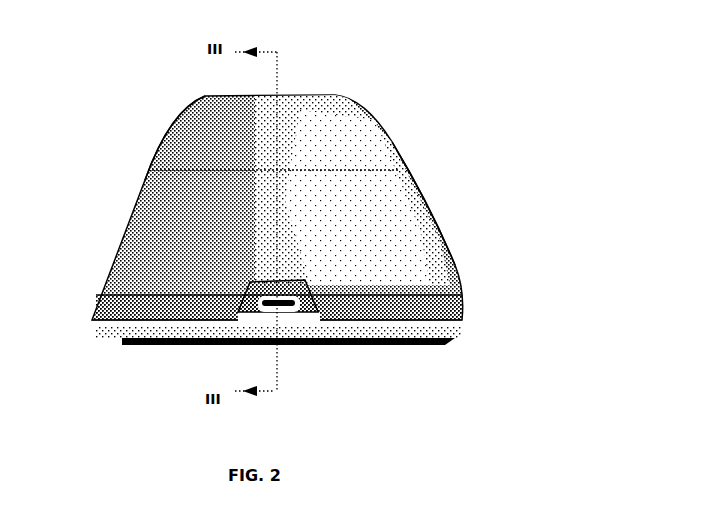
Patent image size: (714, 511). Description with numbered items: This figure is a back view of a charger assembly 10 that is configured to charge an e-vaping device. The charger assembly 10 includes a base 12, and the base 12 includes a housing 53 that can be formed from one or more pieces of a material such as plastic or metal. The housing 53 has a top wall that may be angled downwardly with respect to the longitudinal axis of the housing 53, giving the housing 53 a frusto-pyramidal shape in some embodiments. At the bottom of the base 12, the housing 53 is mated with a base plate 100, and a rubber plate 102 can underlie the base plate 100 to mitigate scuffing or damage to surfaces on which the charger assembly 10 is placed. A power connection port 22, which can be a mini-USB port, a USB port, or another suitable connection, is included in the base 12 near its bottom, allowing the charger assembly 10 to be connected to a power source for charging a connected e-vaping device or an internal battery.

The charger assembly 10 is at (392, 142).
The base 12 is at (403, 208).
The housing 53 is at (192, 160).
The base plate 100 is at (462, 333).
The rubber plate 102 is at (430, 345).
The power connection port 22 is at (300, 305).